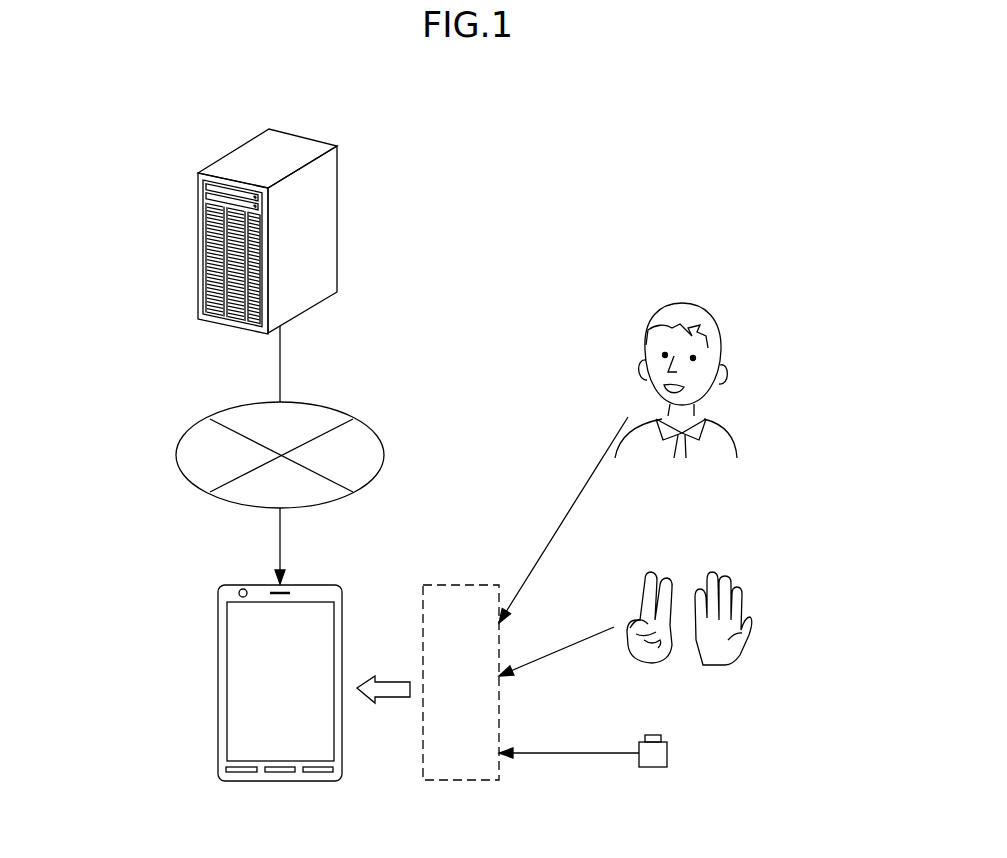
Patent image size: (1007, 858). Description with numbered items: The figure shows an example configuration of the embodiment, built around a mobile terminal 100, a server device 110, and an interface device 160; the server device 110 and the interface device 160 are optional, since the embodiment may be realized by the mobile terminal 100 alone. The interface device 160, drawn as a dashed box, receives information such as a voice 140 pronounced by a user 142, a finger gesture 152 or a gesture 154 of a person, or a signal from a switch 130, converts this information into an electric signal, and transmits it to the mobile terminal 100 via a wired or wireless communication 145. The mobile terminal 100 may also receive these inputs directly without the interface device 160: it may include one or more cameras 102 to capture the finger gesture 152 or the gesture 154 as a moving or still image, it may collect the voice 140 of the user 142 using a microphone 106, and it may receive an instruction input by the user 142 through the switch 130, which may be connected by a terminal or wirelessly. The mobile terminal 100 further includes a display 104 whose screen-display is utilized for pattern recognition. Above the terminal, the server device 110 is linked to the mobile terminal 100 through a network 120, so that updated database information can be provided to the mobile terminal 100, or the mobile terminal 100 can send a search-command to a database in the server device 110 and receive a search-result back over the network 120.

The mobile terminal 100 is at (242, 697).
The camera 102 is at (238, 592).
The display 104 is at (227, 717).
The microphone 106 is at (252, 782).
The server device 110 is at (337, 215).
The network 120 is at (176, 452).
The switch 130 is at (667, 752).
The voice 140 is at (560, 521).
The user 142 is at (683, 302).
The wired or wireless communication 145 is at (378, 676).
The finger gesture 152 is at (713, 572).
The gesture 154 is at (652, 571).
The interface device 160 is at (457, 785).